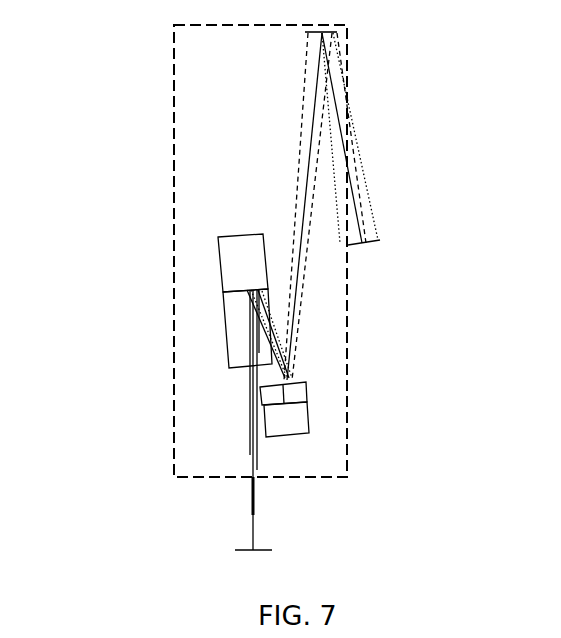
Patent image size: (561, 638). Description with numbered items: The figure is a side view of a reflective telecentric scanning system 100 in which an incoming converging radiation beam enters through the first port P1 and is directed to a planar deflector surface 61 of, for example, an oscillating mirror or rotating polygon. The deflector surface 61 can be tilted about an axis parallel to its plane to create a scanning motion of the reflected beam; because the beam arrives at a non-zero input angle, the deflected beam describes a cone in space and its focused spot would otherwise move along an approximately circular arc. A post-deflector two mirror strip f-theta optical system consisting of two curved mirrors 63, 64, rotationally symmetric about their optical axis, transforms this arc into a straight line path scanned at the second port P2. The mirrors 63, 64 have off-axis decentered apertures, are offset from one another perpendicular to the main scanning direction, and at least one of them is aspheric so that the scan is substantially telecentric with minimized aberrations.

The scanning system 100 is at (173, 177).
The planar deflector surface 61 is at (388, 34).
The curved mirror 63 is at (337, 422).
The curved mirror 64 is at (295, 271).
The first port P1 is at (367, 115).
The second port P2 is at (258, 488).